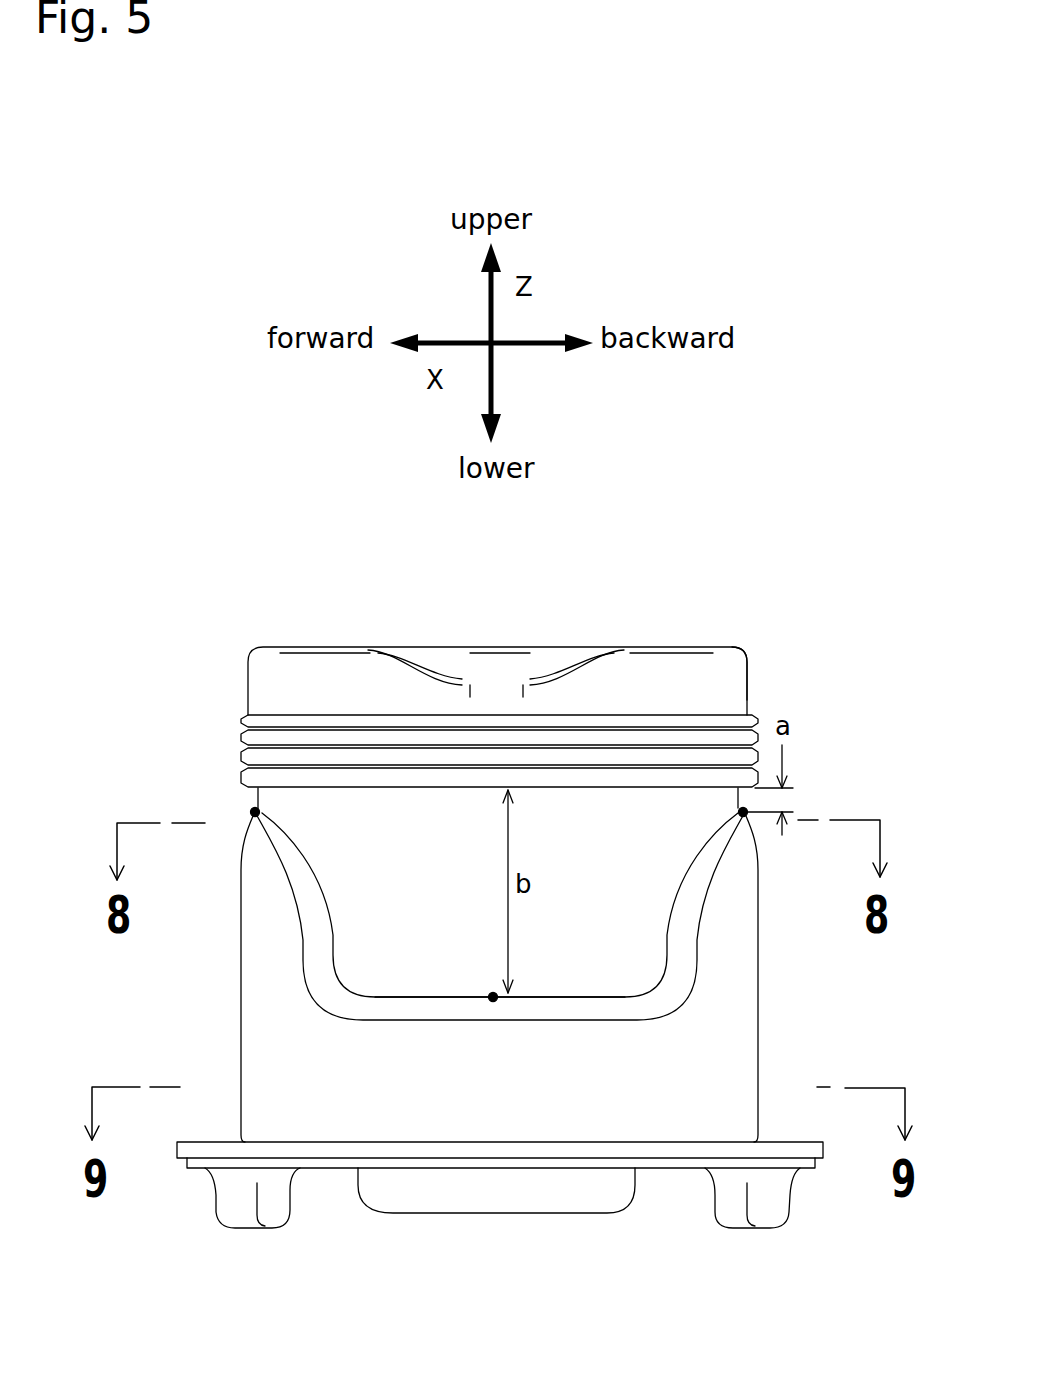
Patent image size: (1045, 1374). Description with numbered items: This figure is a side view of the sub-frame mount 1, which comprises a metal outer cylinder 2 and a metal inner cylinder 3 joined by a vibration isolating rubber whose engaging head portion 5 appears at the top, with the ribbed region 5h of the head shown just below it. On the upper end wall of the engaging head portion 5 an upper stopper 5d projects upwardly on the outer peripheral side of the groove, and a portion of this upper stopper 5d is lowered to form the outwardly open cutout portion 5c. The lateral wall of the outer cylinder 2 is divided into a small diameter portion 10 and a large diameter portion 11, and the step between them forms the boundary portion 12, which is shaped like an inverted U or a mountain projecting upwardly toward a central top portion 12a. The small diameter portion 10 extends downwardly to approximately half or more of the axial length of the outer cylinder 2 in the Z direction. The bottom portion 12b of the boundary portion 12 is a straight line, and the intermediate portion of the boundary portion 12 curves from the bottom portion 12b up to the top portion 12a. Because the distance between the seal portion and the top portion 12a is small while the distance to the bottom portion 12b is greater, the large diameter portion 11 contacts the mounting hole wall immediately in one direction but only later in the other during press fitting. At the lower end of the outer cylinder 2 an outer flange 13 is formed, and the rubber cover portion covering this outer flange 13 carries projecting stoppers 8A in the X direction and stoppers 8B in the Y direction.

The sub-frame mount 1 is at (650, 598).
The outer cylinder 2 is at (830, 928).
The inner cylinder 3 is at (510, 665).
The engaging head portion 5 is at (308, 640).
The cutout portion 5c is at (447, 672).
The upper stopper 5d is at (705, 644).
The screw thread portion 5h is at (243, 742).
The stopper 8A is at (235, 1213).
The stopper 8B is at (455, 1202).
The small diameter portion 10 is at (580, 930).
The large diameter portion 11 is at (730, 992).
The boundary portion 12 is at (673, 965).
The top portion 12a is at (250, 812).
The bottom portion 12b is at (493, 996).
The outer flange 13 is at (645, 1142).